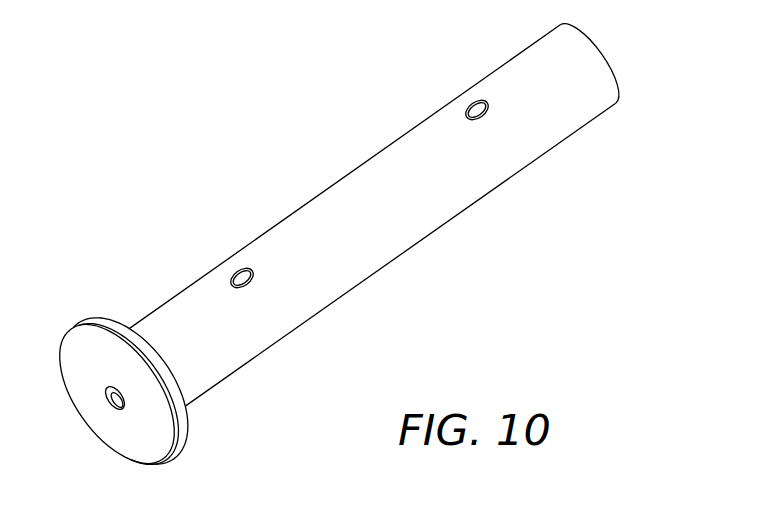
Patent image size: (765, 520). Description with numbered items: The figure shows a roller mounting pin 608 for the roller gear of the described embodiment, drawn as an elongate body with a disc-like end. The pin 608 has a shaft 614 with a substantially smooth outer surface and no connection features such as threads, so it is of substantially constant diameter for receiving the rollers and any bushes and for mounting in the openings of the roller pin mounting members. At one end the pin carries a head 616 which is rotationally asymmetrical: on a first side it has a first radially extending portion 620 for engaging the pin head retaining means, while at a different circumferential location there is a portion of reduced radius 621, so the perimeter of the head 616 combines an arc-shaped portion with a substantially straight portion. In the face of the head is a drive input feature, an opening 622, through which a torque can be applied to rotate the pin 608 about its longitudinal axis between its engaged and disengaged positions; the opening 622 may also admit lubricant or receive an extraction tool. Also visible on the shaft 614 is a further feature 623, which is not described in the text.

The pin 608 is at (212, 173).
The shaft 614 is at (355, 173).
The head 616 is at (195, 433).
The first radially extending portion 620 is at (92, 338).
The portion of reduced radius 621 is at (127, 433).
The drive input feature 622 is at (108, 401).
The side hole 623 is at (472, 107).